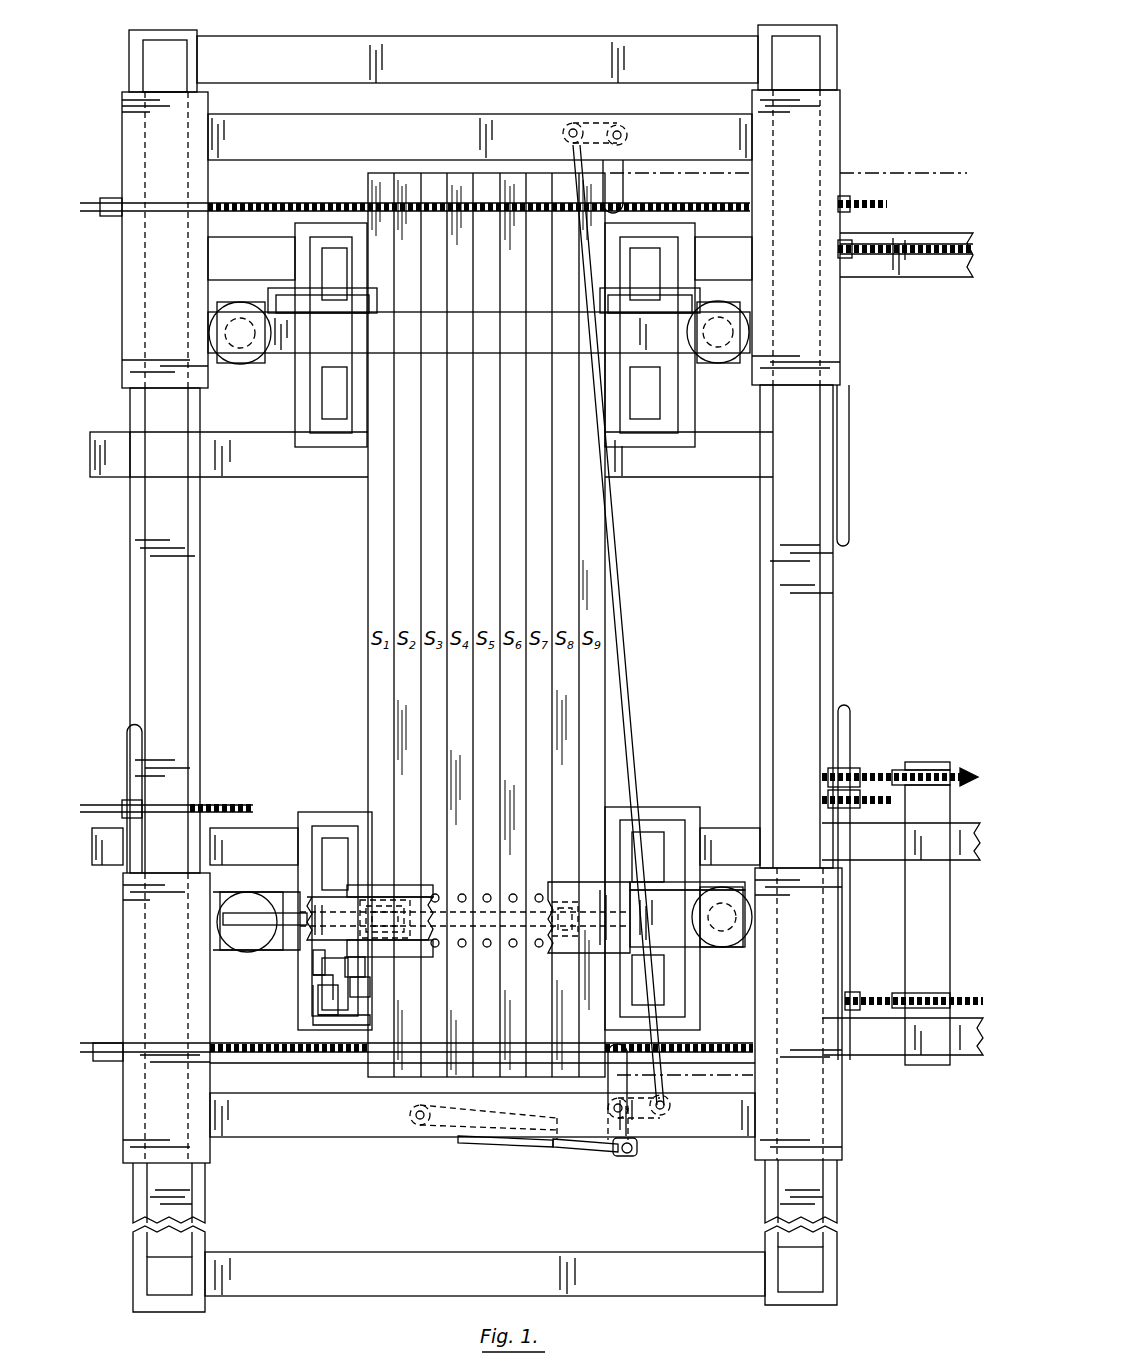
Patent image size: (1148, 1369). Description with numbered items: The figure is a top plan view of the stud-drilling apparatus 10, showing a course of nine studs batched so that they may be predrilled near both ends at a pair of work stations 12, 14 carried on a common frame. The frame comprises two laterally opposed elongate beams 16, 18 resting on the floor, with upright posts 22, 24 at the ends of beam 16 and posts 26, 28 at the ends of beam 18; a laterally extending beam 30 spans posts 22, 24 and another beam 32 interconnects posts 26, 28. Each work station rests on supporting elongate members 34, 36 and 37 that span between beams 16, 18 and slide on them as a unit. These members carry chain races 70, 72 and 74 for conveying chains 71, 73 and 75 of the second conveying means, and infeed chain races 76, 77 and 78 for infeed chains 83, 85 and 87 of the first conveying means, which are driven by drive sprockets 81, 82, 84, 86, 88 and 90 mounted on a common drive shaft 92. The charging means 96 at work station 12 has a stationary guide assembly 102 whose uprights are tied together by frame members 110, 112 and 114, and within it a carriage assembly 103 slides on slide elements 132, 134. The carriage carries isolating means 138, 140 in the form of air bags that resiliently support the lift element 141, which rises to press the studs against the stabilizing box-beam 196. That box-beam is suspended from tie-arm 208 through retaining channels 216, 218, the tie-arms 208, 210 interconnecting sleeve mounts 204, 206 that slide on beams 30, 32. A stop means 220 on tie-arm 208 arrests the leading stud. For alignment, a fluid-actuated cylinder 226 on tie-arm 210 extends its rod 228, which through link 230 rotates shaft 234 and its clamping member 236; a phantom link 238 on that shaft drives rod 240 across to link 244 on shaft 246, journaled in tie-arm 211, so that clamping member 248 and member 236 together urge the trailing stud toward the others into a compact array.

The apparatus 10 is at (582, 28).
The work station 12 is at (345, 792).
The work station 14 is at (337, 465).
The elongate beam 16 is at (198, 510).
The elongate beam 18 is at (765, 525).
The upright post 22 is at (150, 46).
The upright post 24 is at (165, 1277).
The upright post 26 is at (793, 40).
The upright post 28 is at (805, 1277).
The laterally extending beam 30 is at (168, 605).
The laterally extending beam 32 is at (793, 615).
The elongate member 34 is at (200, 1045).
The elongate member 36 is at (258, 832).
The elongate member 37 is at (717, 818).
The chain race 70 is at (245, 1054).
The conveying chain 71 is at (305, 1054).
The chain race 72 is at (216, 798).
The conveying chain 73 is at (242, 806).
The chain race 74 is at (218, 204).
The conveying chain 75 is at (285, 204).
The infeed chain race 76 is at (950, 1000).
The infeed chain race 77 is at (965, 775).
The infeed chain race 78 is at (910, 248).
The drive sprocket 81 is at (115, 1062).
The drive sprocket 82 is at (850, 995).
The infeed conveying chain 83 is at (885, 1000).
The drive sprocket 84 is at (855, 800).
The infeed conveying chain 85 is at (880, 772).
The drive sprocket 86 is at (848, 770).
The infeed conveying chain 87 is at (945, 262).
The drive sprocket 88 is at (855, 260).
The drive sprocket 90 is at (848, 204).
The drive shaft 92 is at (846, 498).
The charging means 96 is at (313, 802).
The guide assembly 102 is at (303, 968).
The carriage assembly 103 is at (333, 986).
The frame member 110 is at (665, 812).
The frame member 112 is at (300, 858).
The frame member 114 is at (693, 876).
The slide element 132 is at (315, 1000).
The slide element 134 is at (330, 1022).
The isolating means 138 is at (237, 905).
The isolating means 140 is at (712, 947).
The lift element 141 is at (225, 918).
The box-beam 196 is at (367, 907).
The sleeve mount 204 is at (127, 990).
The sleeve mount 206 is at (815, 1118).
The tie-arm 208 is at (597, 905).
The tie-arm 210 is at (300, 1132).
The tie-arm 211 is at (364, 126).
The retaining channel 216 is at (378, 897).
The retaining channel 218 is at (420, 885).
The stop means 220 is at (375, 987).
The fluid-actuated cylinder 226 is at (520, 1144).
The extendible-retractable rod 228 is at (580, 1151).
The link 230 is at (636, 1152).
The rotatable shaft 234 is at (595, 1119).
The clamping member 236 is at (612, 1078).
The link 238 is at (668, 1112).
The rod 240 is at (622, 662).
The link 244 is at (595, 130).
The rotatable shaft 246 is at (630, 135).
The clamping member 248 is at (625, 196).